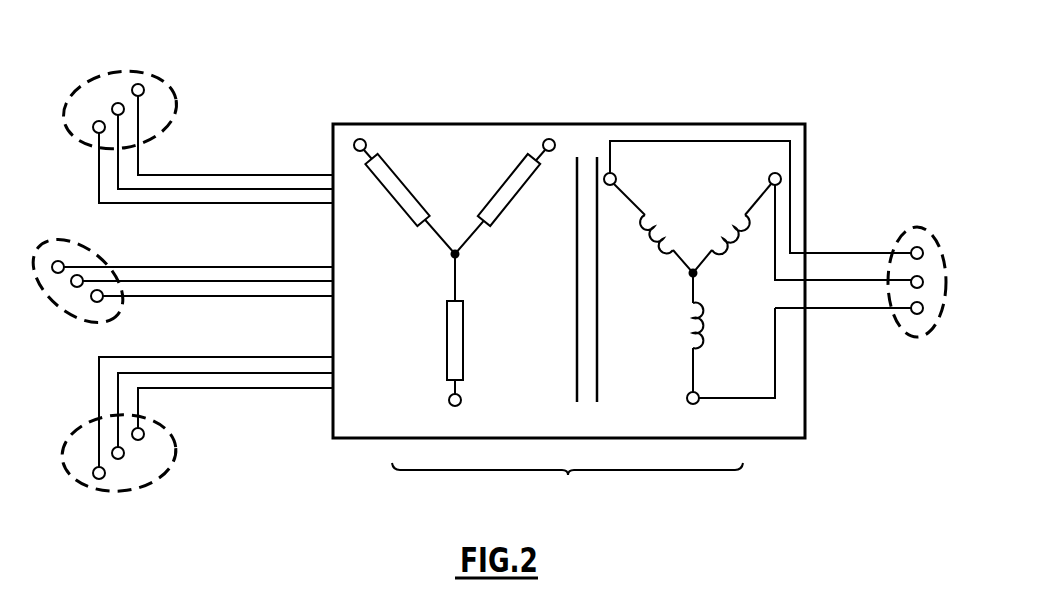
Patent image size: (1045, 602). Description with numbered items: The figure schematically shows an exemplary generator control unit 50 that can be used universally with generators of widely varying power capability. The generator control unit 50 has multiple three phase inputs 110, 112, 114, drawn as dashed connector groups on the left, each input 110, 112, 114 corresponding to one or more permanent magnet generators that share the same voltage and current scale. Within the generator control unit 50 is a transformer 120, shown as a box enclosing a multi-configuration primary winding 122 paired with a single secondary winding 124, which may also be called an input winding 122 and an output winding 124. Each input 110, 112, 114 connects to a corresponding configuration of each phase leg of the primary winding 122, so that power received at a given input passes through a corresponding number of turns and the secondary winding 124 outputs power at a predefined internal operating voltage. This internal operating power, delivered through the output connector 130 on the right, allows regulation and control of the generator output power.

The generator control unit 50 is at (541, 63).
The three phase input 110 is at (102, 75).
The three phase input 112 is at (100, 255).
The three phase input 114 is at (170, 462).
The transformer 120 is at (569, 300).
The multi-configuration primary winding 122 is at (462, 170).
The secondary winding 124 is at (700, 170).
The output connector 130 is at (910, 228).